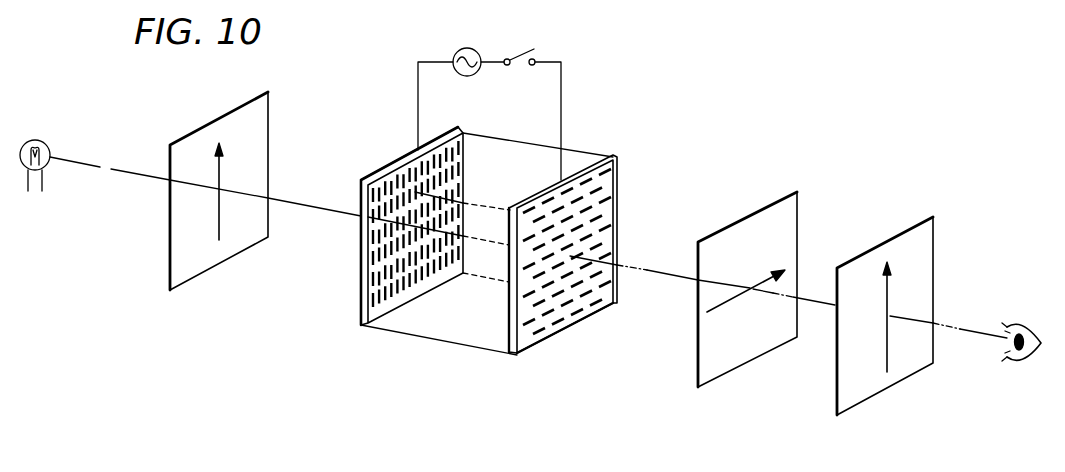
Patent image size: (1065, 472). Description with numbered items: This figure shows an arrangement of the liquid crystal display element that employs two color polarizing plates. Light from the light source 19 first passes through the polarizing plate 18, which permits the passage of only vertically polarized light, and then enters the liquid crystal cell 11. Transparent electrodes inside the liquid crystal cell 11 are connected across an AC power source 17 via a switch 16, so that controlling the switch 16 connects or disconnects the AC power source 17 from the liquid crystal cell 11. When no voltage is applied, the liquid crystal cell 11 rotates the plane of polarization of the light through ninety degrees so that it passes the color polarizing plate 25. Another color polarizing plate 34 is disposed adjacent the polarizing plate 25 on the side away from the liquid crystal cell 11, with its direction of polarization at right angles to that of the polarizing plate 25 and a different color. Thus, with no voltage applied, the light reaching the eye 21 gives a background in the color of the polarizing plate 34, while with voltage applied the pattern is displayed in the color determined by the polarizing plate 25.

The light source 19 is at (39, 141).
The polarizing plate 18 is at (201, 128).
The AC power source 17 is at (463, 49).
The switch 16 is at (520, 56).
The liquid crystal cell 11 is at (447, 343).
The color polarizing plate 25 is at (730, 228).
The color polarizing plate 34 is at (873, 250).
The eye 21 is at (1016, 326).